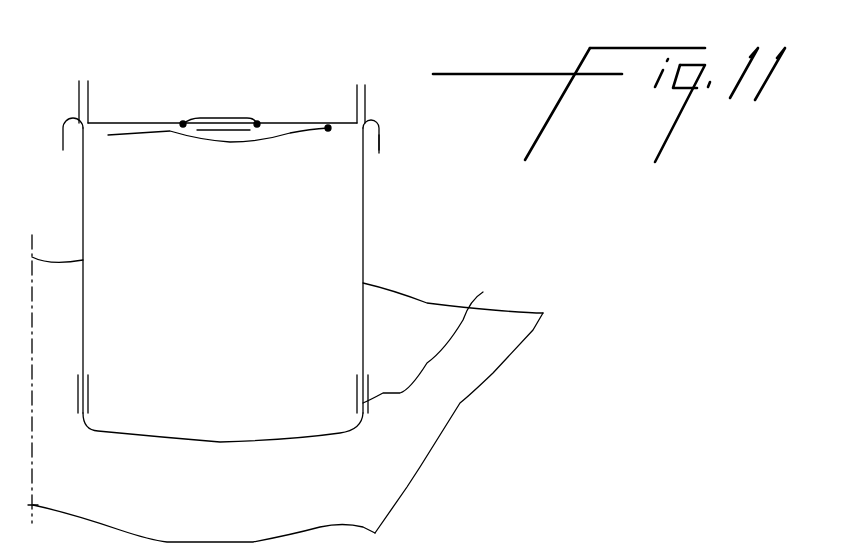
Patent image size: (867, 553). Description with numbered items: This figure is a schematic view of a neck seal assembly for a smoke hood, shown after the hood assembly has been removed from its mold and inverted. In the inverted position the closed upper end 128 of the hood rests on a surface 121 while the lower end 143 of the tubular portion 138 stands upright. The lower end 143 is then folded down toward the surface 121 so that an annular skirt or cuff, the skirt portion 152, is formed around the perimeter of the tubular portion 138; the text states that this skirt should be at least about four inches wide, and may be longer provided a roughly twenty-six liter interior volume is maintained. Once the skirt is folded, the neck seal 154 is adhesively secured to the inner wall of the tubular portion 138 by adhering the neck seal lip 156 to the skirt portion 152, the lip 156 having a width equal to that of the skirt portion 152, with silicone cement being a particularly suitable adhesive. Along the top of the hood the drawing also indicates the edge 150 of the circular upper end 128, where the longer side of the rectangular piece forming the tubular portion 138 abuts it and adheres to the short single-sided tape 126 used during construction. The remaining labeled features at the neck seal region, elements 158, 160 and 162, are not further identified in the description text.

The base 121 is at (533, 330).
The lower corner portion 126 is at (367, 400).
The bottom wall 128 is at (202, 442).
The side wall 138 is at (363, 255).
The rim flange 143 is at (379, 153).
The web 150 is at (441, 343).
The lip 152 is at (385, 142).
The top wall 154 is at (350, 123).
The upstanding rim 156 is at (366, 103).
The tab 158 is at (197, 123).
The lower strap 160 is at (328, 128).
The upper strap 162 is at (250, 142).